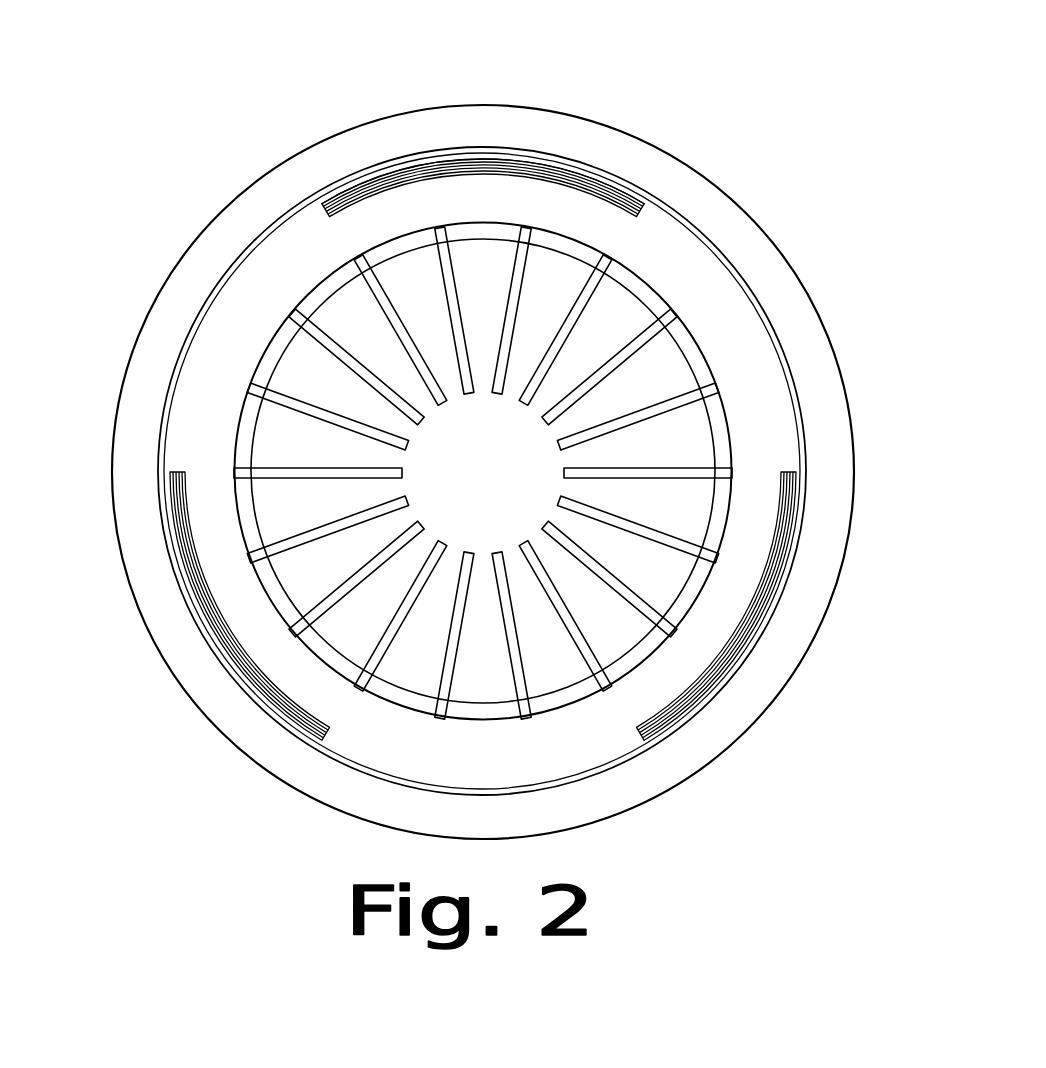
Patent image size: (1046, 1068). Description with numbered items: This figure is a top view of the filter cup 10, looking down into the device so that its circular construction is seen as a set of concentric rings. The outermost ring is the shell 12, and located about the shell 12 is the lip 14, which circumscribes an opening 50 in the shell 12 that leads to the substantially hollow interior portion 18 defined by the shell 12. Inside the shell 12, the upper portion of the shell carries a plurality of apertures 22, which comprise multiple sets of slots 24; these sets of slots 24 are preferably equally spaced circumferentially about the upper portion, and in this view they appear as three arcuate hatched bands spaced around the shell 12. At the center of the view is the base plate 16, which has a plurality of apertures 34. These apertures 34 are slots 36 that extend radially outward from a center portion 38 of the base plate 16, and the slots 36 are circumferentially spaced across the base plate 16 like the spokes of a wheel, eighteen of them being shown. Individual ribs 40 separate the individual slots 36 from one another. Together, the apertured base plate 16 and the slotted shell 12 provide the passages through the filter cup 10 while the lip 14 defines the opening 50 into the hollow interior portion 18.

The filter cup 10 is at (596, 58).
The shell 12 is at (707, 272).
The lip 14 is at (218, 228).
The base plate 16 is at (665, 367).
The hollow interior portion 18 is at (231, 351).
The plurality of apertures 22 is at (435, 166).
The sets of slots 24 is at (594, 161).
The plurality of apertures 34 is at (214, 438).
The slots 36 is at (520, 253).
The center portion 38 is at (464, 483).
The ribs 40 is at (367, 248).
The opening 50 is at (370, 775).